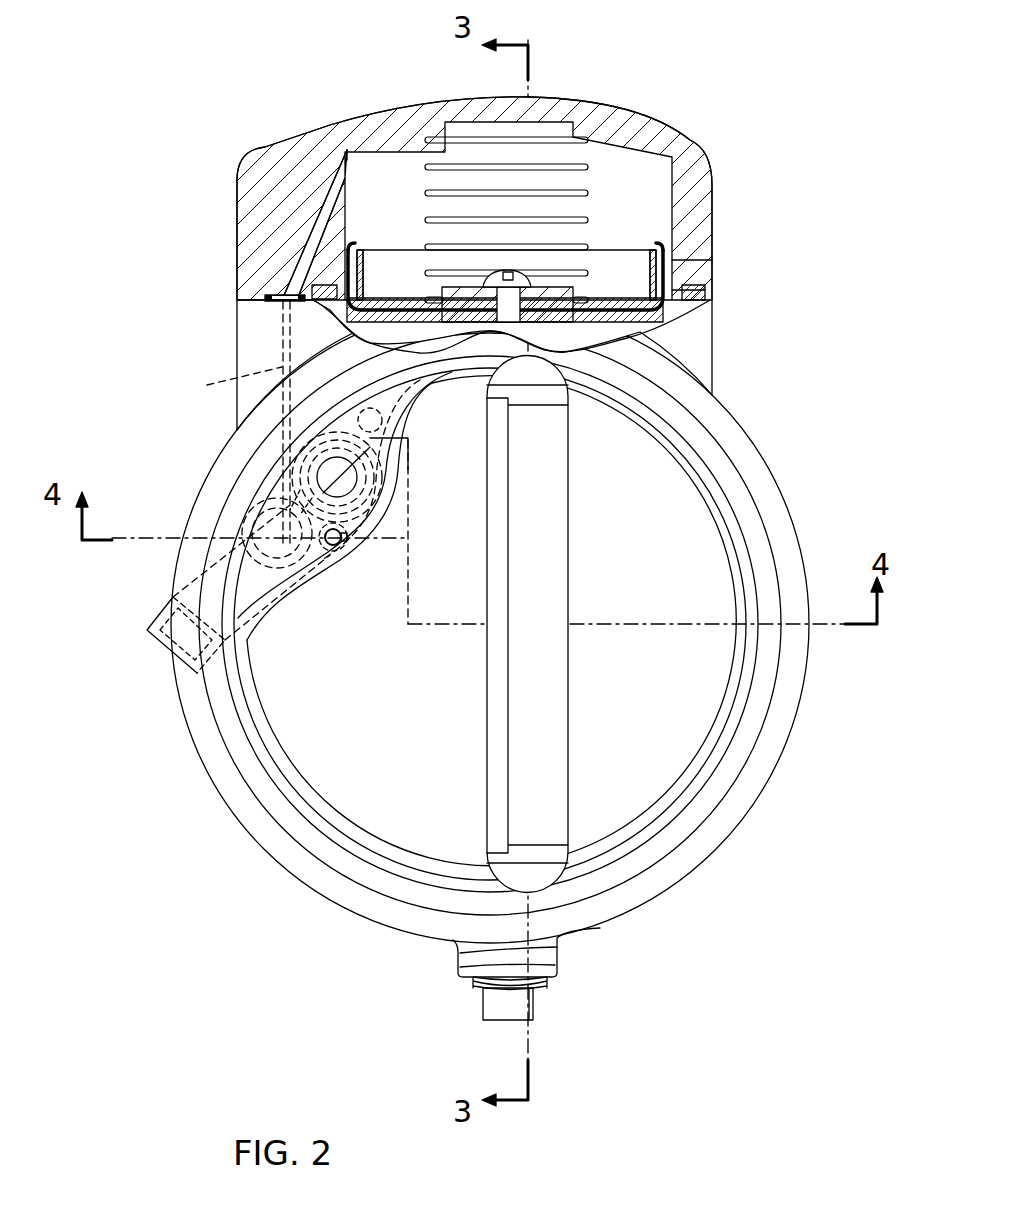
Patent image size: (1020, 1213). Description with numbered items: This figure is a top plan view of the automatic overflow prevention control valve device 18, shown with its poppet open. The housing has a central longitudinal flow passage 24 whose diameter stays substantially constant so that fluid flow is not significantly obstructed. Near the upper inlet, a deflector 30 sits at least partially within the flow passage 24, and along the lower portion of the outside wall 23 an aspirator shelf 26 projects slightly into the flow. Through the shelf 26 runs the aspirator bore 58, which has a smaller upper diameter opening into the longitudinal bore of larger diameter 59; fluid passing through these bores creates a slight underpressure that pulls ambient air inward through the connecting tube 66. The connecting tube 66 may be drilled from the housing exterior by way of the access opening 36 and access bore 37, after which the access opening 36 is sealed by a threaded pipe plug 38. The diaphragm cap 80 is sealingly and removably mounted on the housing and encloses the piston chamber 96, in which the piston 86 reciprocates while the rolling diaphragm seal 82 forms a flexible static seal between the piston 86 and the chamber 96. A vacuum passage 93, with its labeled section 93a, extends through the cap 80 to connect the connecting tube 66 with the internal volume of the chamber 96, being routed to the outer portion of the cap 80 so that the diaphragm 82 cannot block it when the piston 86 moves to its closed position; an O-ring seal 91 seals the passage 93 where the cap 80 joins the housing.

The control valve device 18 is at (795, 491).
The outside wall 23 is at (700, 713).
The flow passage 24 is at (398, 800).
The aspirator shelf 26 is at (270, 590).
The deflector 30 is at (568, 762).
The access opening 36 is at (170, 655).
The access bore 37 is at (238, 572).
The threaded pipe plug 38 is at (192, 678).
The aspirator bore 58 is at (355, 478).
The longitudinal bore of larger diameter 59 is at (358, 522).
The connecting tube 66 is at (260, 495).
The diaphragm cap 80 is at (693, 197).
The rolling diaphragm seal 82 is at (687, 277).
The piston 86 is at (614, 298).
The O-ring seal 91 is at (265, 302).
The vacuum passage 93 is at (308, 243).
The wedge tip 93a is at (357, 176).
The piston chamber 96 is at (620, 165).